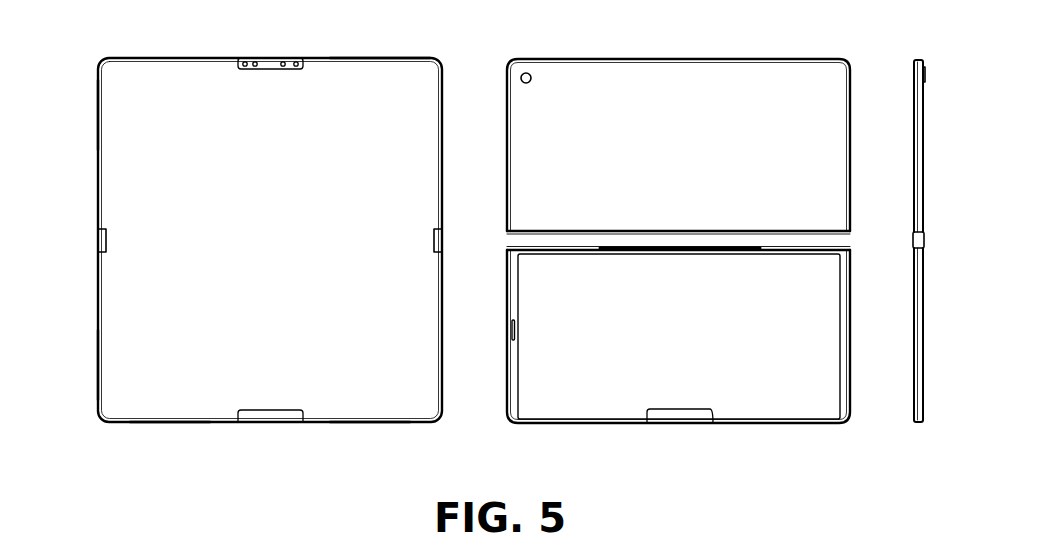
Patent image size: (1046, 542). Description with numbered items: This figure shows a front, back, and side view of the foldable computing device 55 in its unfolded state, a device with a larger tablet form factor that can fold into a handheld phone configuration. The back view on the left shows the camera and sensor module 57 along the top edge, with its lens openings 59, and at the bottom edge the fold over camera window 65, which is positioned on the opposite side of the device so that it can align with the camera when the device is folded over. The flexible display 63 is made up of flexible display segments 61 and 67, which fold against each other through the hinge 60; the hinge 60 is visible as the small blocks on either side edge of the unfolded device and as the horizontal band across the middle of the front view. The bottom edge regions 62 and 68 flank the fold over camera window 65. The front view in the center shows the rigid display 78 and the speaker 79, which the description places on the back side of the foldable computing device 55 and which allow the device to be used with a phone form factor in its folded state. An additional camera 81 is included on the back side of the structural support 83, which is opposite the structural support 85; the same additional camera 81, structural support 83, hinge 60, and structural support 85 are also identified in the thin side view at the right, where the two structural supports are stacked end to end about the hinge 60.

The foldable computing device 55 is at (114, 36).
The camera and sensor module 57 is at (245, 60).
The camera lens openings 59 is at (272, 63).
The flexible display segment 61 is at (380, 62).
The flexible display 63 is at (105, 113).
The hinge 60 is at (100, 240).
The flexible display segment 67 is at (105, 365).
The bottom edge left portion 62 is at (168, 422).
The fold over camera window 65 is at (270, 418).
The bottom edge right portion 68 is at (370, 422).
The additional camera 81 is at (526, 73).
The structural support 83 is at (845, 104).
The rigid display 78 is at (833, 310).
The speaker 79 is at (510, 328).
The structural support 85 is at (851, 404).